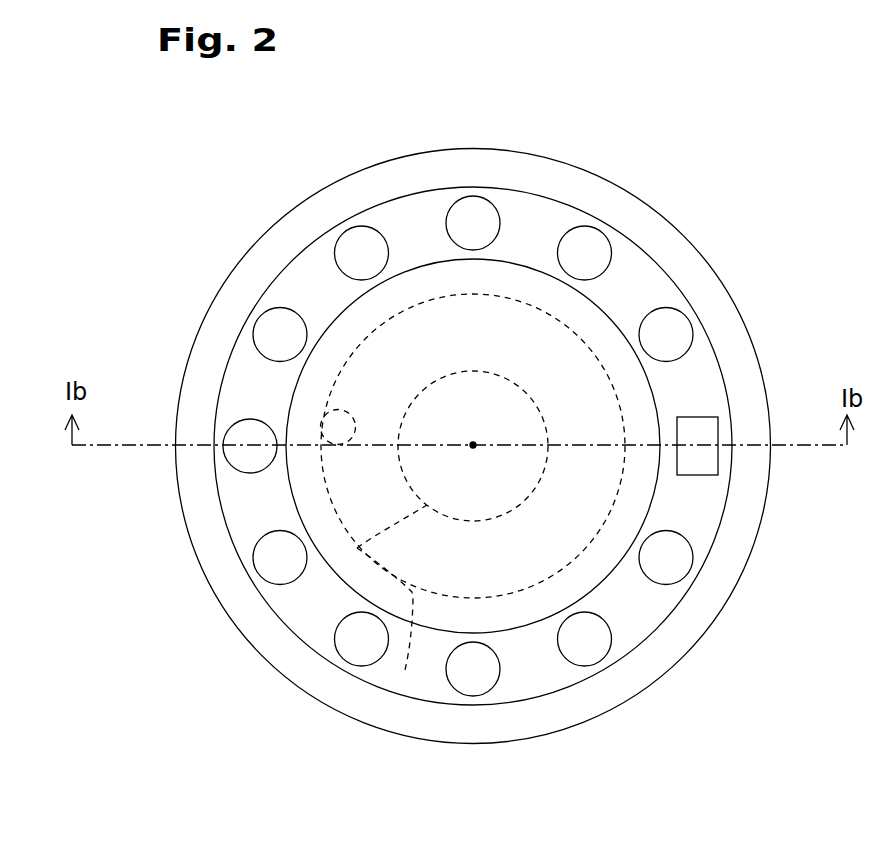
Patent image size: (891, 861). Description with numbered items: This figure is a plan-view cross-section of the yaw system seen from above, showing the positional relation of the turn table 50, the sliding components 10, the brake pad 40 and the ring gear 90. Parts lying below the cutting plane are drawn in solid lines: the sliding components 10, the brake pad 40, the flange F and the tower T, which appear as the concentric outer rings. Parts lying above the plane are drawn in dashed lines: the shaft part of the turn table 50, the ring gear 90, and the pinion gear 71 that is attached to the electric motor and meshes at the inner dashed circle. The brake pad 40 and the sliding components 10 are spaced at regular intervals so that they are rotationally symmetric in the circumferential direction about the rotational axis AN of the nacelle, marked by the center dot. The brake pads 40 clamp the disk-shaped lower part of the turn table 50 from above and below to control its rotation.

The sliding component 10 is at (595, 250).
The brake pad 40 is at (697, 430).
The turn table 50 is at (357, 548).
The pinion gear 71 is at (320, 415).
The ring gear 90 is at (405, 670).
The rotational axis of the nacelle AN is at (473, 445).
The flange F is at (423, 673).
The tower T is at (590, 697).